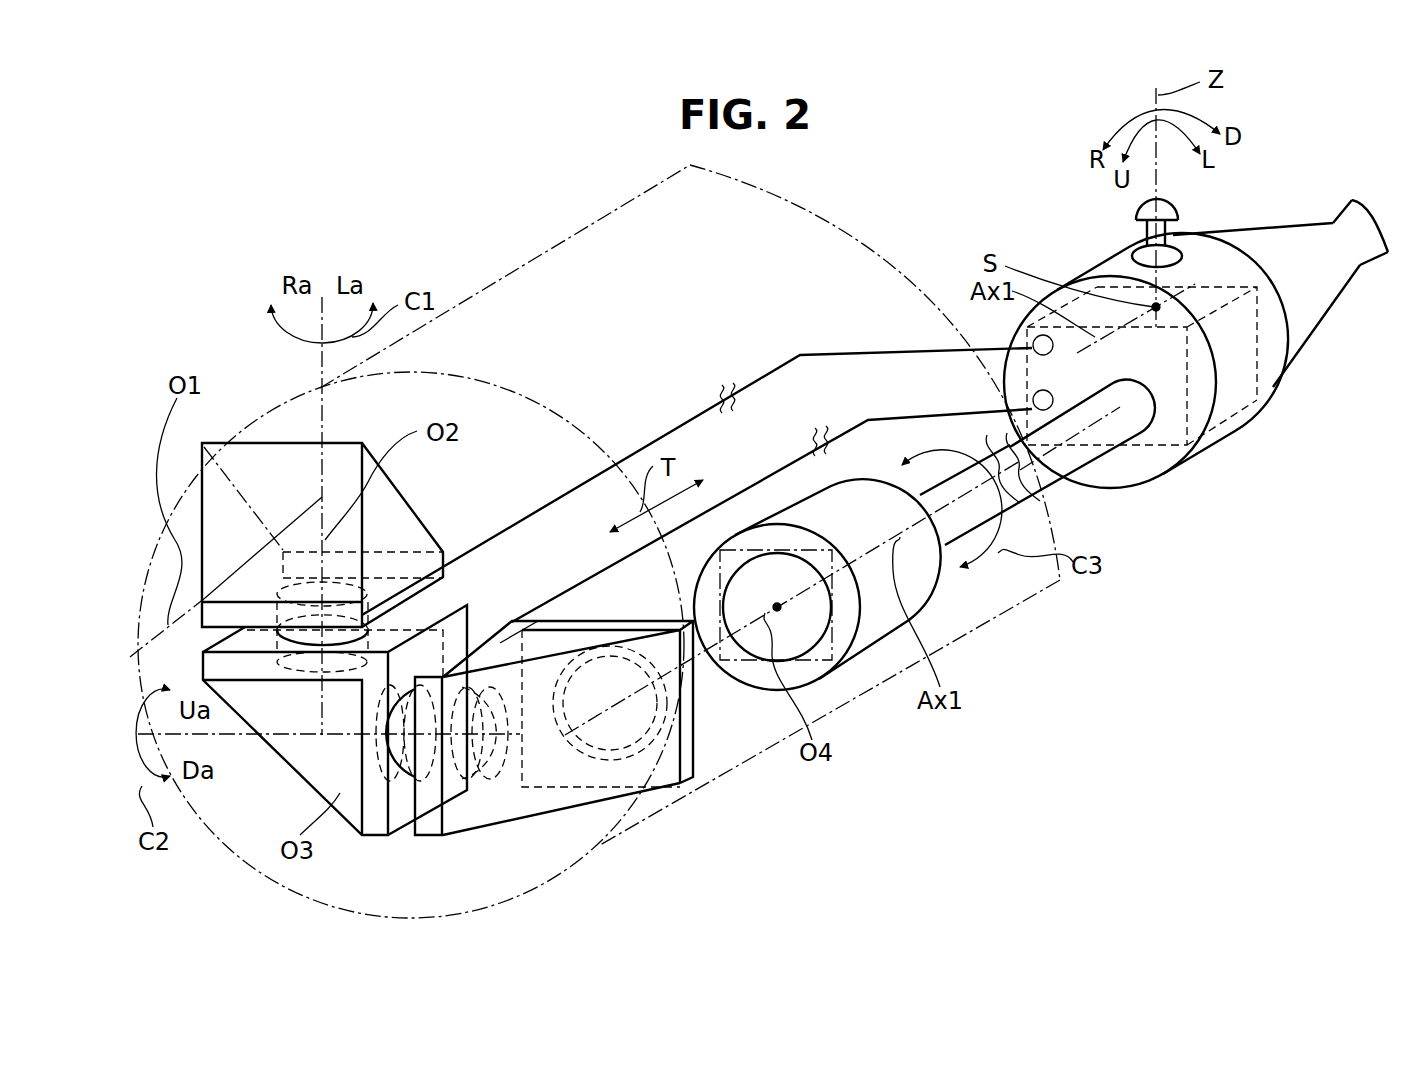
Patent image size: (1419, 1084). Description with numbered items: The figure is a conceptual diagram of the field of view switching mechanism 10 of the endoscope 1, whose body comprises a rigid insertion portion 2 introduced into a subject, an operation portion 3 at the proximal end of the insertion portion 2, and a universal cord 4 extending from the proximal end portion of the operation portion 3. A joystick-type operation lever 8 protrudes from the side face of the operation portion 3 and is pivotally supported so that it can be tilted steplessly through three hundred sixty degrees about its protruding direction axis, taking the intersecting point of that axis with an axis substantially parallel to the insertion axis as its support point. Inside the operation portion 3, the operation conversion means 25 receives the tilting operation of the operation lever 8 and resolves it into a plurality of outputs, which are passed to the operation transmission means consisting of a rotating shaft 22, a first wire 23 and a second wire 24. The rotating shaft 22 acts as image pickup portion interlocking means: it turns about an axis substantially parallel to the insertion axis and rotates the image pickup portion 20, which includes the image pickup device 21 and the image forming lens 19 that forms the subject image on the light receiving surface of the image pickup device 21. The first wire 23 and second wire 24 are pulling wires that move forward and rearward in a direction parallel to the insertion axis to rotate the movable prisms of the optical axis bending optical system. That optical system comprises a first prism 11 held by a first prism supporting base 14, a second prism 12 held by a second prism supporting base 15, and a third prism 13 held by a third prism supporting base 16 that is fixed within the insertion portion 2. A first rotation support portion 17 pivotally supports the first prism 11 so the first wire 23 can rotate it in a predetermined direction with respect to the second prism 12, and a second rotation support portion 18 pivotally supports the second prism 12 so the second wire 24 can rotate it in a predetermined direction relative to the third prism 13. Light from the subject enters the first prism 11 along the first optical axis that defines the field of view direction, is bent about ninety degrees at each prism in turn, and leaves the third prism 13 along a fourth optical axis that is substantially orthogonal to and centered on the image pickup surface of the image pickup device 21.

The endoscope 1 is at (386, 165).
The insertion portion 2 is at (530, 240).
The operation portion 3 is at (1113, 270).
The universal cord 4 is at (1367, 250).
The operation lever 8 is at (1157, 208).
The field of view switching mechanism 10 is at (583, 320).
The first prism 11 is at (440, 513).
The second prism 12 is at (340, 795).
The third prism 13 is at (483, 807).
The first prism supporting base 14 is at (433, 567).
The second prism supporting base 15 is at (377, 812).
The third prism supporting base 16 is at (432, 818).
The first rotation support portion 17 is at (372, 622).
The second rotation support portion 18 is at (407, 813).
The image forming lens 19 is at (720, 690).
The image pickup portion 20 is at (822, 872).
The image pickup device 21 is at (827, 647).
The rotating shaft 22 is at (1062, 455).
The first wire 23 is at (738, 392).
The second wire 24 is at (838, 432).
The operation conversion means 25 is at (1242, 392).